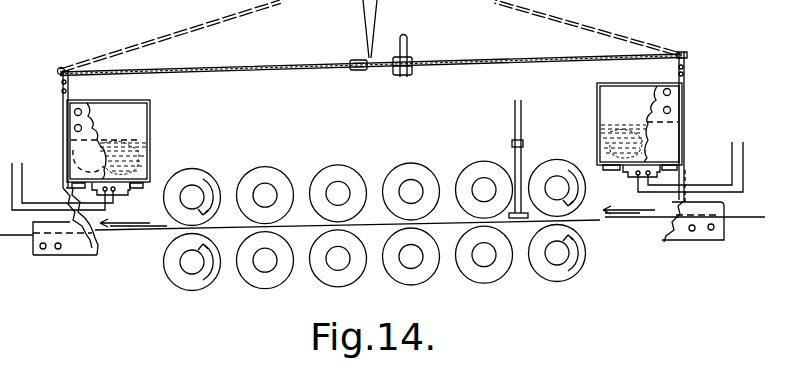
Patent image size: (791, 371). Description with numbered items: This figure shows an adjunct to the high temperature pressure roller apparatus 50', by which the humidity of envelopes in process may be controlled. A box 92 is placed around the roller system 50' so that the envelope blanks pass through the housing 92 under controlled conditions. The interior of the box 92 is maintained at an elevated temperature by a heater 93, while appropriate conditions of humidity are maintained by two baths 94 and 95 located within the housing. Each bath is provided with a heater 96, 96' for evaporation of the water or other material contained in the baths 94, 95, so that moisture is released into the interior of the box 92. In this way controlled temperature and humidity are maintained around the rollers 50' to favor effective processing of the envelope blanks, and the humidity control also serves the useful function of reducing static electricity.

The box 92 is at (503, 50).
The heater 93 is at (524, 148).
The bath 94 is at (150, 152).
The bath 95 is at (597, 89).
The heater 96 is at (83, 189).
The heater 96' is at (672, 171).
The roller apparatus 50' is at (375, 222).